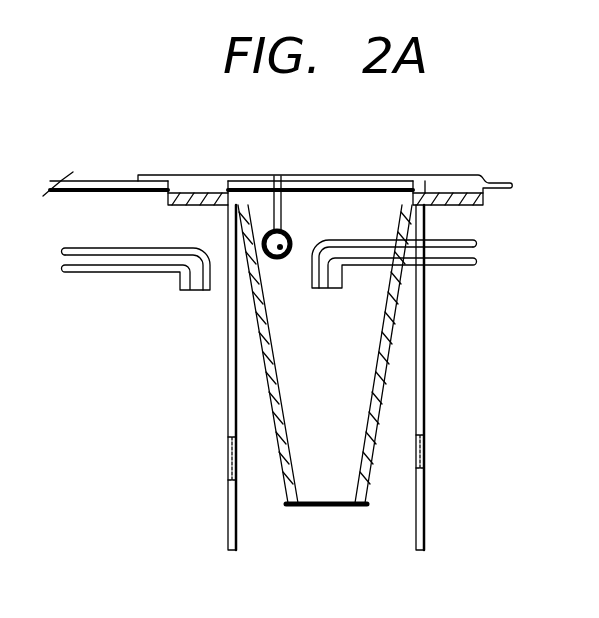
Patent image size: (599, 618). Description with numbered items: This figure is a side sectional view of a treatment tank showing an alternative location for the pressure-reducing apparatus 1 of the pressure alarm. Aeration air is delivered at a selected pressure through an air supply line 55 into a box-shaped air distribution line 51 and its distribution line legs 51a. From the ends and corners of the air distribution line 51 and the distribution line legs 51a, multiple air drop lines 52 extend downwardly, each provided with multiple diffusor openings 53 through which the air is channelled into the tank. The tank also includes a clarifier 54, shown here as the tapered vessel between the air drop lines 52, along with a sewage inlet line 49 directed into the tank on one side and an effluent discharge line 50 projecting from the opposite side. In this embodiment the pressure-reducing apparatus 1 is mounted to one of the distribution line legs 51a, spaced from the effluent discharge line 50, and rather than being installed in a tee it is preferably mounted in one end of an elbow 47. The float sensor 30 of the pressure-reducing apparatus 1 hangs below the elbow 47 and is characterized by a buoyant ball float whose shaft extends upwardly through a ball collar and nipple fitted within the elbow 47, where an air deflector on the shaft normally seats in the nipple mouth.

The pressure-reducing apparatus 1 is at (277, 262).
The float sensor 30 is at (284, 225).
The elbow 47 is at (270, 178).
The sewage inlet line 49 is at (150, 272).
The effluent discharge line 50 is at (382, 266).
The air distribution line 51 is at (218, 180).
The distribution line legs 51a is at (384, 189).
The air drop lines 52 is at (228, 386).
The diffusor openings 53 is at (228, 460).
The clarifier 54 is at (325, 506).
The air supply line 55 is at (113, 186).